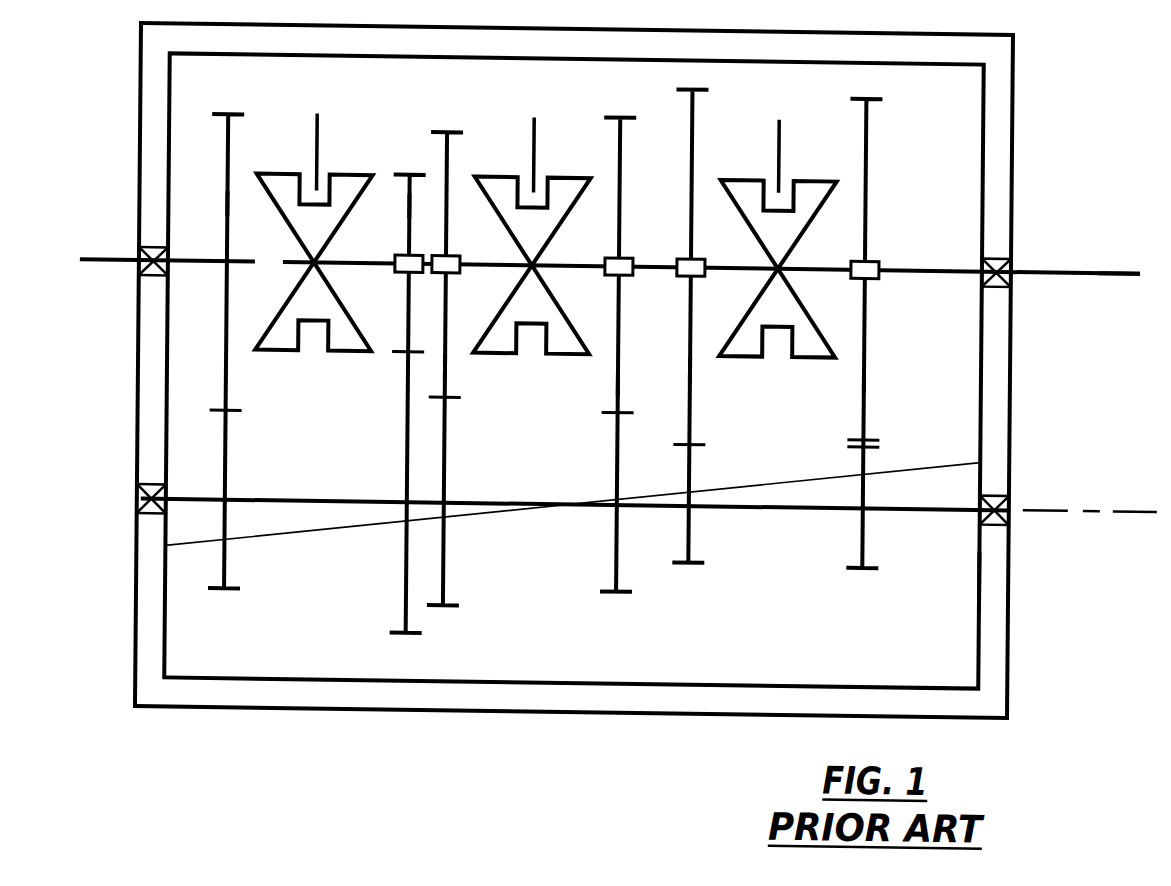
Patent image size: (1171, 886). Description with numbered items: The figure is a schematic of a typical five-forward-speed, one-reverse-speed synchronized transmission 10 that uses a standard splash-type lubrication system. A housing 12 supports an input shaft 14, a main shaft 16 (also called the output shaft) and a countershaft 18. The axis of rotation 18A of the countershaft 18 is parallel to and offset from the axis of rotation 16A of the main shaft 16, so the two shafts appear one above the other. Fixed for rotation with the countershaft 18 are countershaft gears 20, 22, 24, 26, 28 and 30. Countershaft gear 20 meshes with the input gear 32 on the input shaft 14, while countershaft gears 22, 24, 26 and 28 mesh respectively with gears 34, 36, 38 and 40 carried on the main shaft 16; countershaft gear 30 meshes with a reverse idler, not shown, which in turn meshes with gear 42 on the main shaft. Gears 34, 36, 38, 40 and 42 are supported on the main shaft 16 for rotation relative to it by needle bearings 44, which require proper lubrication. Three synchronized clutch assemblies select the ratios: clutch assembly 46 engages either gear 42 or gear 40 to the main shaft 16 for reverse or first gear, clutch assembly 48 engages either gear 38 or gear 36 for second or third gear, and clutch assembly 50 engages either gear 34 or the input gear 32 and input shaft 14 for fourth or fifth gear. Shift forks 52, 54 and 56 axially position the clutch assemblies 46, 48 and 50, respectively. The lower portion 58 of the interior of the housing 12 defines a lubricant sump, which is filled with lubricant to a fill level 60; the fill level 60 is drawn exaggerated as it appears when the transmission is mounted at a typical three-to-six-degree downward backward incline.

The transmission 10 is at (248, 736).
The housing 12 is at (1000, 40).
The input shaft 14 is at (112, 263).
The main shaft 16 is at (1087, 264).
The axis of rotation of main shaft 16A is at (1120, 266).
The countershaft 18 is at (372, 499).
The axis of rotation of countershaft 18A is at (1057, 497).
The countershaft gear 20 is at (232, 559).
The countershaft gear 22 is at (408, 586).
The countershaft gear 24 is at (452, 558).
The countershaft gear 26 is at (618, 542).
The countershaft gear 28 is at (694, 527).
The countershaft gear 30 is at (866, 528).
The input gear 32 is at (225, 201).
The gear 34 is at (407, 199).
The gear 36 is at (450, 363).
The gear 38 is at (613, 376).
The gear 40 is at (693, 362).
The gear 42 is at (865, 370).
The needle bearings 44 is at (452, 249).
The synchronized clutch assembly 46 is at (750, 185).
The synchronized clutch assembly 48 is at (506, 185).
The synchronized clutch assembly 50 is at (286, 186).
The shift fork 52 is at (783, 143).
The shift fork 54 is at (538, 142).
The shift fork 56 is at (323, 140).
The lower portion 58 is at (983, 562).
The fill level 60 is at (489, 508).